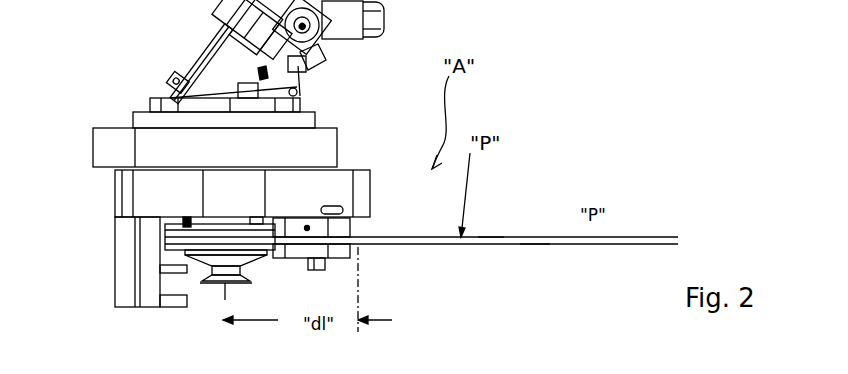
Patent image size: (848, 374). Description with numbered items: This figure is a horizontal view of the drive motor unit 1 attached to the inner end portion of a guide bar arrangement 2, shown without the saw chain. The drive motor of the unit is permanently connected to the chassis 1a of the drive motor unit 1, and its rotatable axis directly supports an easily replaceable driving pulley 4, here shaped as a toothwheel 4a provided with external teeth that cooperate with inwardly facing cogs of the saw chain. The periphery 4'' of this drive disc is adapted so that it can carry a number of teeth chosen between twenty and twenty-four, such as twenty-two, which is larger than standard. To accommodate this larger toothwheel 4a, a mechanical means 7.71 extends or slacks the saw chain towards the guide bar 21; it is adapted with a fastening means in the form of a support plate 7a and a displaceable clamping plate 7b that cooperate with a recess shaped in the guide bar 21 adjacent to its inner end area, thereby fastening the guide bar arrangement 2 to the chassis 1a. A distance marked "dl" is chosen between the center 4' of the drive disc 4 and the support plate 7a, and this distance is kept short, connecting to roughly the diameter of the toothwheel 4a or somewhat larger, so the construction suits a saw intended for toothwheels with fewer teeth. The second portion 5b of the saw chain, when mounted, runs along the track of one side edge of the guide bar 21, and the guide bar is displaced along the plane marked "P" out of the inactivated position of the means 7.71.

The drive motor unit 1 is at (86, 150).
The chassis 1a is at (312, 143).
The means for extending the saw chain 7.71 is at (340, 200).
The periphery 4'' is at (176, 204).
The toothwheel 4a is at (219, 230).
The support plate 7a is at (295, 228).
The clamping plate 7b is at (302, 253).
The driving pulley 4 is at (233, 277).
The center of the drive disc 4' is at (208, 307).
The guide bar arrangement 2 is at (429, 252).
The guide bar 21 is at (535, 242).
The second portion of the saw chain 5b is at (491, 228).